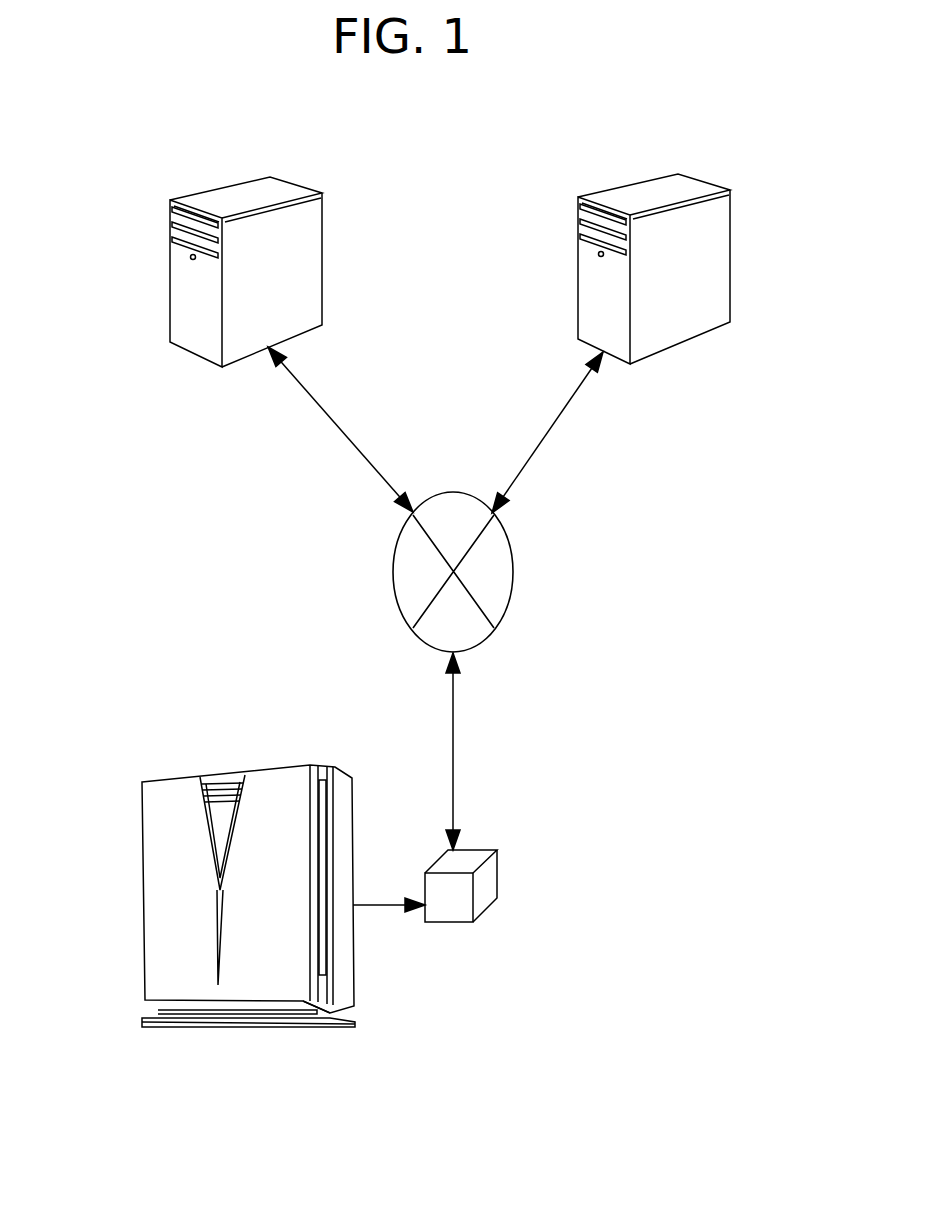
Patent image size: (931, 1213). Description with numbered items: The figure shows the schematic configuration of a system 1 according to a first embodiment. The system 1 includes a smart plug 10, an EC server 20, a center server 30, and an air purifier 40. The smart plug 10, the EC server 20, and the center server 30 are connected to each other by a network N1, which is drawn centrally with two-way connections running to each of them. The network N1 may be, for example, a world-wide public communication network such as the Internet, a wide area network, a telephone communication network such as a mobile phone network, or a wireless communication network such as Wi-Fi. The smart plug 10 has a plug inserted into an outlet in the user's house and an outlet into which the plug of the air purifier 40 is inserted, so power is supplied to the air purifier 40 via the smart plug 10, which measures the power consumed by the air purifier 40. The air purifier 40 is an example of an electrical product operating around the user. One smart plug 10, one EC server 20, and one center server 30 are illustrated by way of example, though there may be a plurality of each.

The system 1 is at (675, 493).
The smart plug 10 is at (460, 912).
The EC server 20 is at (183, 278).
The center server 30 is at (592, 277).
The air purifier 40 is at (150, 797).
The network N1 is at (512, 585).